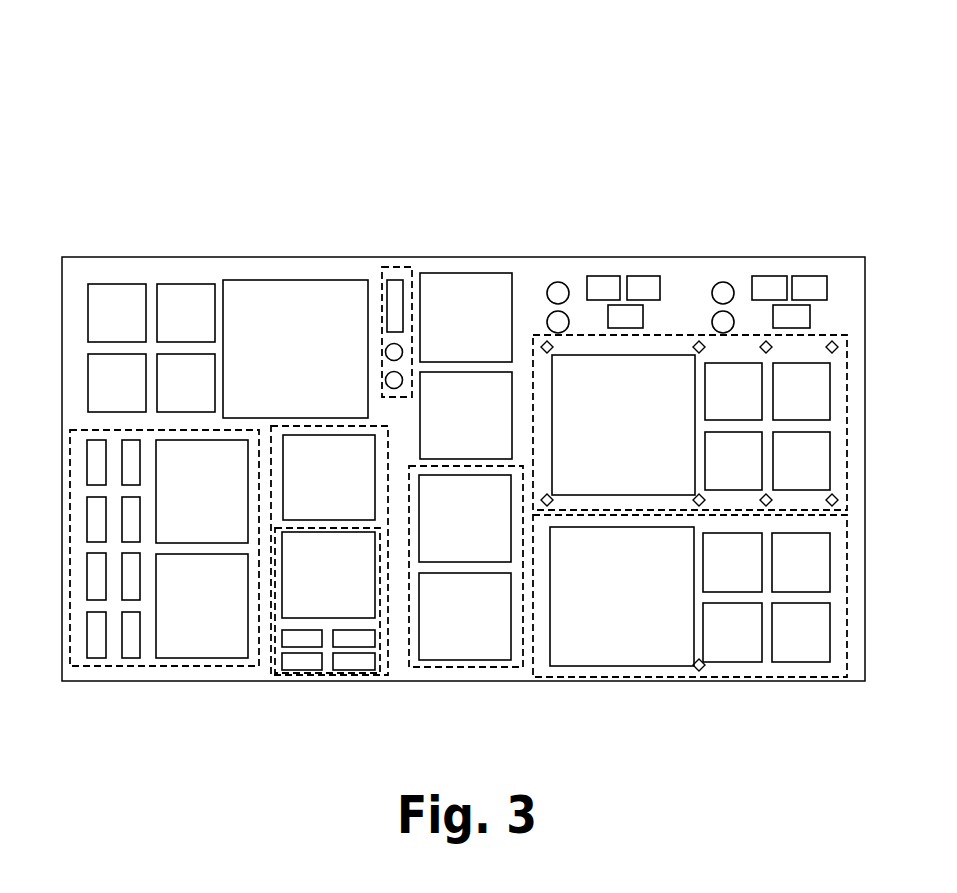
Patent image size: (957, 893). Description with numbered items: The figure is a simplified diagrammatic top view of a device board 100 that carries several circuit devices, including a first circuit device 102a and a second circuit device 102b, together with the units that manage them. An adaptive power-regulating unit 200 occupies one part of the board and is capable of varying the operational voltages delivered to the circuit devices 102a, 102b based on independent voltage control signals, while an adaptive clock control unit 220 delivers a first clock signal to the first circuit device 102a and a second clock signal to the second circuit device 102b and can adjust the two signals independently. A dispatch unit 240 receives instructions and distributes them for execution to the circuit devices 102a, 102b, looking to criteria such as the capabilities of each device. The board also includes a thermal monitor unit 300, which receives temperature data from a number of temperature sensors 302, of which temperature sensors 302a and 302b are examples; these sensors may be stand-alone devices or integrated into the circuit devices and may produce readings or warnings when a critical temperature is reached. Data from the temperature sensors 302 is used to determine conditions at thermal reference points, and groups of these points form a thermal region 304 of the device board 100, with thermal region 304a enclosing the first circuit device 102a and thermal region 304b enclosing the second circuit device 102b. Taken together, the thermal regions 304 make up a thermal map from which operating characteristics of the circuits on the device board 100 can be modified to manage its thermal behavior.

The device board 100 is at (466, 112).
The first circuit device 102a is at (623, 425).
The second circuit device 102b is at (622, 596).
The adaptive power-regulating unit 200 is at (158, 664).
The adaptive clock control unit 220 is at (398, 266).
The dispatch unit 240 is at (385, 518).
The thermal monitor unit 300 is at (294, 676).
The temperature sensors 302 is at (846, 347).
The temperature sensor 302a is at (699, 342).
The temperature sensor 302b is at (699, 670).
The thermal region 304 is at (497, 672).
The thermal region 304a is at (740, 422).
The thermal region 304b is at (741, 596).